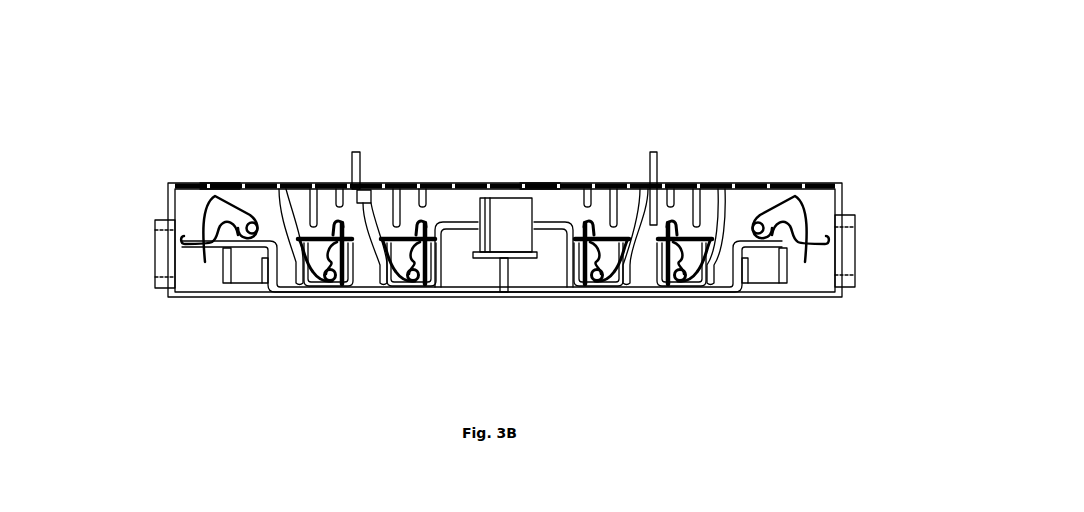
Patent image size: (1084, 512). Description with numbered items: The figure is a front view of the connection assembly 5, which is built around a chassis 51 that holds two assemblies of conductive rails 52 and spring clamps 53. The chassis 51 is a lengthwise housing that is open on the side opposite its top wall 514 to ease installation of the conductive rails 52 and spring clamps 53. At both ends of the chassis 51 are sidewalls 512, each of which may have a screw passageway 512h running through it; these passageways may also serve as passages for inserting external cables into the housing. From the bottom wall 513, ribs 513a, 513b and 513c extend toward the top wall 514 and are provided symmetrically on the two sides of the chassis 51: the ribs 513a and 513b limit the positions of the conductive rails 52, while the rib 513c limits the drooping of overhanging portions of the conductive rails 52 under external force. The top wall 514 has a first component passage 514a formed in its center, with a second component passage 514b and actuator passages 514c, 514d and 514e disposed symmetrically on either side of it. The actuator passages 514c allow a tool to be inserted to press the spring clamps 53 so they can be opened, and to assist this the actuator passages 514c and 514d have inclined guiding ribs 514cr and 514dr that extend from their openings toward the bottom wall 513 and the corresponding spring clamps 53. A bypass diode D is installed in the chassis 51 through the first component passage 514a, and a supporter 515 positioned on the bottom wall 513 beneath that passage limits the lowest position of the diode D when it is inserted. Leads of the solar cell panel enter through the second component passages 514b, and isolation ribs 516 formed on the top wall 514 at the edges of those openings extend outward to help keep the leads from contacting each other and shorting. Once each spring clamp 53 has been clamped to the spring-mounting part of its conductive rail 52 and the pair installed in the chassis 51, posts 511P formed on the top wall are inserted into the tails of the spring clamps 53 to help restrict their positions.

The connection assembly 5 is at (610, 18).
The chassis 51 is at (750, 150).
The post 511P is at (781, 249).
The sidewall 512 is at (845, 186).
The screw passageway 512h is at (162, 262).
The bottom wall 513 is at (368, 293).
The rib 513a is at (440, 281).
The rib 513b is at (263, 272).
The rib 513c is at (226, 272).
The top wall 514 is at (180, 187).
The first component passage 514a is at (542, 187).
The second component passage 514b is at (677, 187).
The actuator passage 514c is at (383, 186).
The inclined guiding rib 514cr is at (627, 278).
The actuator passage 514d is at (297, 186).
The inclined guiding rib 514dr is at (716, 276).
The actuator passage 514e is at (220, 187).
The supporter 515 is at (517, 257).
The isolation rib 516 is at (650, 150).
The conductive rail 52 is at (319, 289).
The spring clamp 53 is at (697, 280).
The bypass diode D is at (503, 210).